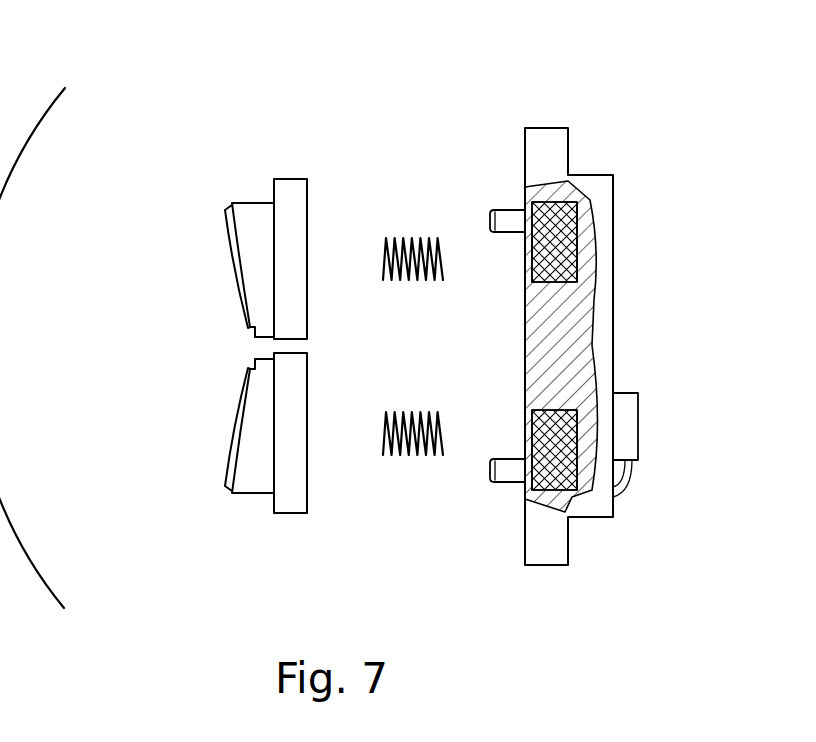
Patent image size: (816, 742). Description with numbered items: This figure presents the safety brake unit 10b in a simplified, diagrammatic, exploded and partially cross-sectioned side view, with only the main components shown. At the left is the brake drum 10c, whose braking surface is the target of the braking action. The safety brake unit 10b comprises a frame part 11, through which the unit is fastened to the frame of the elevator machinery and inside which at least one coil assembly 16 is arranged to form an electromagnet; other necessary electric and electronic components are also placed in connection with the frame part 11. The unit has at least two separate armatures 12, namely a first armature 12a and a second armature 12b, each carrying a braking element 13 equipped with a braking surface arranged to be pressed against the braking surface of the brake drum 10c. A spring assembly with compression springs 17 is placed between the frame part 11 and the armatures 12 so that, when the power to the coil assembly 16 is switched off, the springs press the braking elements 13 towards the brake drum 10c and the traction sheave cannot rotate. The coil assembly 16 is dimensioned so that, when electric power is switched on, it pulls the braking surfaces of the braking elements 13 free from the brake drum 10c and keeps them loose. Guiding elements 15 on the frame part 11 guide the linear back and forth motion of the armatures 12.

The safety brake unit 10b is at (490, 67).
The brake drum 10c is at (95, 128).
The frame part 11 is at (604, 304).
The armatures 12 is at (287, 138).
The first armature 12a is at (303, 208).
The second armature 12b is at (287, 503).
The braking element 13 is at (252, 210).
The guiding elements 15 is at (503, 215).
The coil assembly 16 is at (540, 440).
The compression springs 17 is at (413, 408).